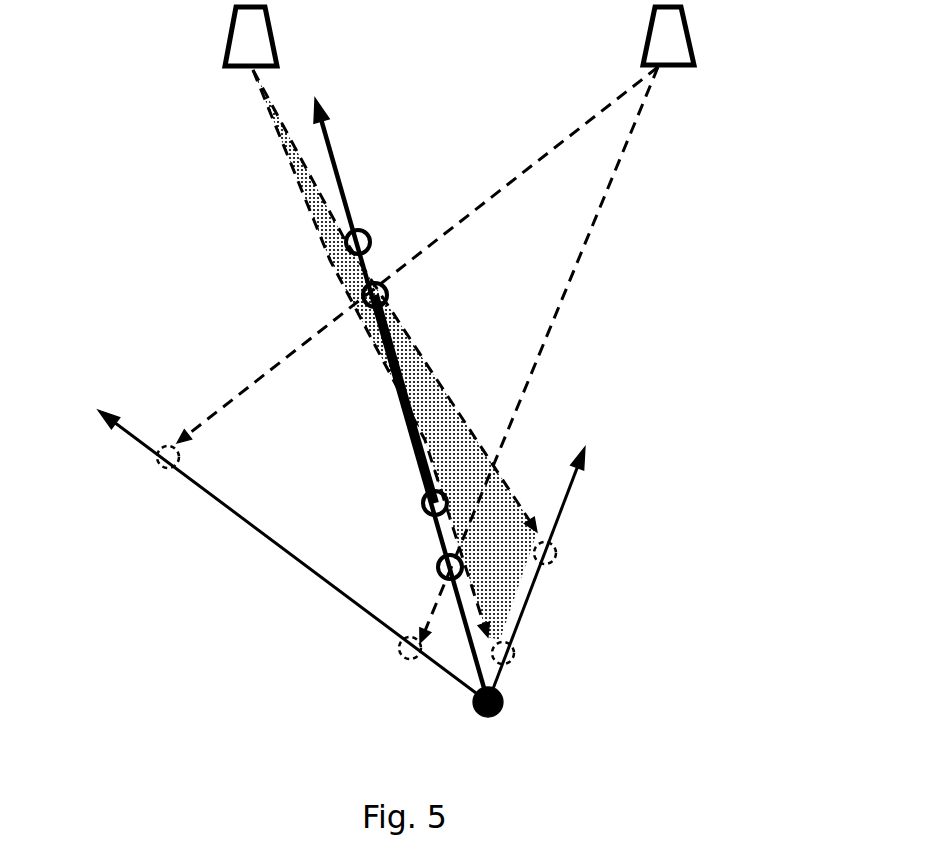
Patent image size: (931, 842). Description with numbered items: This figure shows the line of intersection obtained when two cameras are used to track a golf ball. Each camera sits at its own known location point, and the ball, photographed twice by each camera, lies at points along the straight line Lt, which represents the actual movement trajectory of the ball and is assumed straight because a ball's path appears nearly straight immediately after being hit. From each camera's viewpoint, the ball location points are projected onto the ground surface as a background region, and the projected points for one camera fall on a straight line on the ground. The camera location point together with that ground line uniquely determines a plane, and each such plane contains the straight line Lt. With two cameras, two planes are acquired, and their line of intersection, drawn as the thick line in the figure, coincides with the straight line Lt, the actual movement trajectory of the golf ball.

The straight line of the actual movement trajectory Lt is at (401, 400).